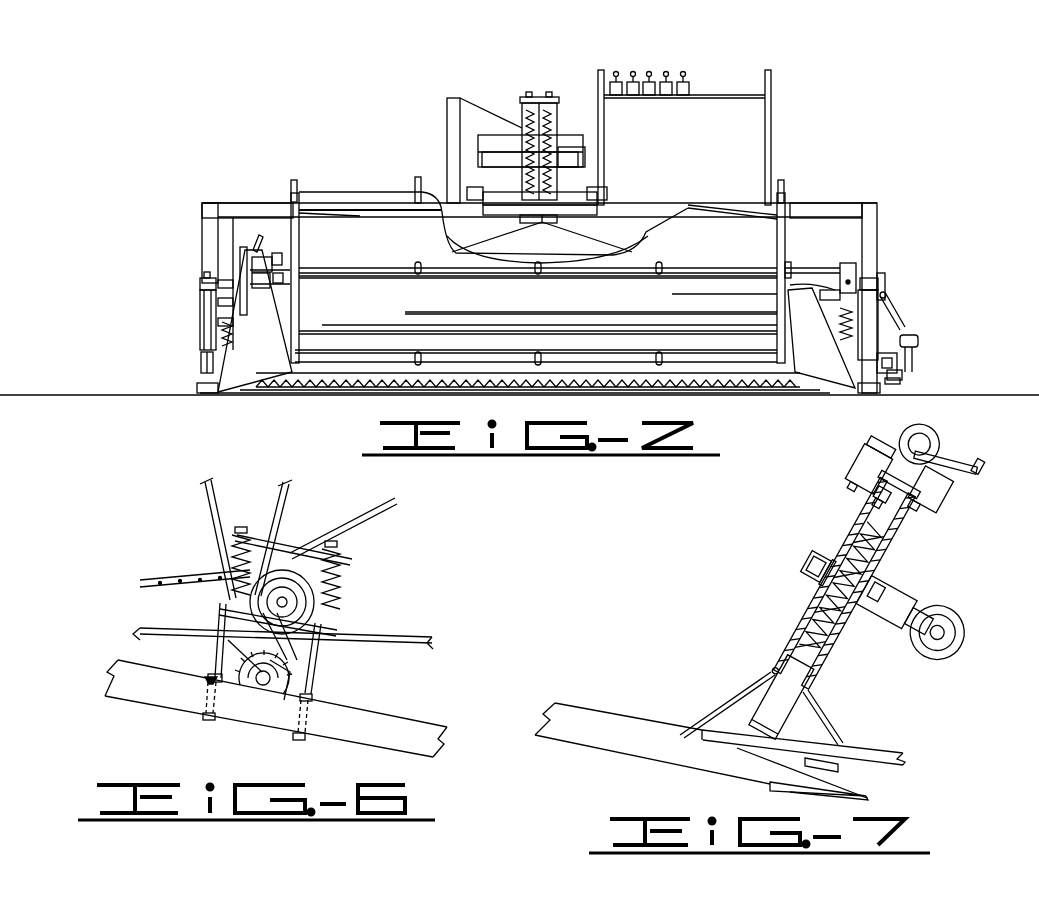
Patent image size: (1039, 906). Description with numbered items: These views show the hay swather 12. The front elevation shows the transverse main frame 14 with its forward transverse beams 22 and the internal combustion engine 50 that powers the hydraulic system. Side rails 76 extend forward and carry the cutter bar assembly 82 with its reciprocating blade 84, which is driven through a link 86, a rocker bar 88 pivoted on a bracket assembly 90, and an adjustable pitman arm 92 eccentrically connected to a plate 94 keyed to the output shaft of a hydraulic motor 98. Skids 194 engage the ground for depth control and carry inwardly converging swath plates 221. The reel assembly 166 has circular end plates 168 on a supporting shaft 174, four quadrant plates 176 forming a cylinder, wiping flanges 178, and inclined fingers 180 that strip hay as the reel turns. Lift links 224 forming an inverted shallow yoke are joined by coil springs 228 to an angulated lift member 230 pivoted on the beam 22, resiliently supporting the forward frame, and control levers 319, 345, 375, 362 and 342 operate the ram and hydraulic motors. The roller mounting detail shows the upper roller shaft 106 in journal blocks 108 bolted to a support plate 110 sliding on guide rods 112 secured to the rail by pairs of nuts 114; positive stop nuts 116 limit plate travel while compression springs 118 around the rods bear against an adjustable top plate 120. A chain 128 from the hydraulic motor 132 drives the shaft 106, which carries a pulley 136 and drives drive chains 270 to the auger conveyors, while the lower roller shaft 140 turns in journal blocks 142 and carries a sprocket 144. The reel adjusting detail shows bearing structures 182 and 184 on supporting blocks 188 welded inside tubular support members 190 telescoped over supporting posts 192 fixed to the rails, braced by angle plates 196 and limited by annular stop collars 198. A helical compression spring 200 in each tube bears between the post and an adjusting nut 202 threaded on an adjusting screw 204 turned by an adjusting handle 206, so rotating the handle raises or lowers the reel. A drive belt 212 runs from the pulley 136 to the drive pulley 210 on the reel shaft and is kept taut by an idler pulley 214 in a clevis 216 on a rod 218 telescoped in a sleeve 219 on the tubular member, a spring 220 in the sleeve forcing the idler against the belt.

In FIG. 2, the hay swather 12 is at (318, 188).
In FIG. 2, the transverse main frame 14 is at (878, 212).
In FIG. 2, the upper and lower forward transverse beams 22 is at (263, 203).
In FIG. 2, the internal combustion engine 50 is at (568, 138).
In FIG. 6, the side rails 76 is at (352, 742).
In FIG. 7, the side rails 76 is at (635, 748).
In FIG. 2, the cutter bar assembly 82 is at (590, 382).
In FIG. 7, the cutter bar assembly 82 is at (866, 786).
In FIG. 2, the reciprocating blade 84 is at (468, 383).
In FIG. 7, the reciprocating blade 84 is at (788, 786).
In FIG. 2, the link 86 is at (902, 382).
In FIG. 2, the rocker bar 88 is at (904, 352).
In FIG. 2, the bracket assembly 90 is at (884, 350).
In FIG. 2, the pitman arm 92 is at (895, 305).
In FIG. 2, the plate 94 is at (886, 280).
In FIG. 2, the hydraulic motor 98 is at (828, 275).
In FIG. 6, the shaft 106 is at (300, 594).
In FIG. 6, the journal blocks 108 is at (302, 673).
In FIG. 6, the support plate 110 is at (336, 631).
In FIG. 6, the guide rods 112 is at (228, 648).
In FIG. 6, the nuts 114 is at (208, 681).
In FIG. 6, the positive stop nut 116 is at (221, 610).
In FIG. 2, the compression springs 118 is at (840, 336).
In FIG. 6, the compression springs 118 is at (237, 538).
In FIG. 6, the adjustable top plate 120 is at (295, 540).
In FIG. 6, the chain 128 is at (296, 470).
In FIG. 2, the hydraulic motor 132 is at (272, 262).
In FIG. 6, the pulley 136 is at (290, 604).
In FIG. 6, the elongated shaft 140 is at (262, 686).
In FIG. 6, the journal blocks 142 is at (260, 684).
In FIG. 6, the sprocket 144 is at (232, 670).
In FIG. 2, the reel assembly 166 is at (365, 190).
In FIG. 2, the circular end plates 168 is at (299, 224).
In FIG. 2, the supporting shaft 174 is at (808, 262).
In FIG. 2, the quadrant plates 176 is at (516, 304).
In FIG. 2, the wiping flanges 178 is at (571, 272).
In FIG. 2, the fingers 180 is at (418, 178).
In FIG. 7, the bearing structure 182 is at (866, 452).
In FIG. 2, the bearing structure 184 is at (851, 268).
In FIG. 2, the supporting block 188 is at (222, 298).
In FIG. 7, the supporting block 188 is at (862, 476).
In FIG. 2, the tubular support members 190 is at (205, 312).
In FIG. 7, the tubular support members 190 is at (858, 528).
In FIG. 7, the supporting post 192 is at (769, 690).
In FIG. 2, the skids 194 is at (200, 390).
In FIG. 7, the skids 194 is at (856, 752).
In FIG. 7, the angle plates 196 is at (720, 714).
In FIG. 2, the annular stop collar 198 is at (200, 356).
In FIG. 7, the annular stop collar 198 is at (770, 670).
In FIG. 7, the helical compression spring 200 is at (882, 546).
In FIG. 7, the adjusting nut 202 is at (868, 501).
In FIG. 7, the adjusting screw 204 is at (938, 505).
In FIG. 2, the adjusting handle 206 is at (208, 277).
In FIG. 7, the adjusting handle 206 is at (950, 468).
In FIG. 2, the drive pulley 210 is at (248, 246).
In FIG. 2, the drive belt 212 is at (250, 250).
In FIG. 6, the drive belt 212 is at (396, 498).
In FIG. 7, the idler pulley 214 is at (946, 608).
In FIG. 7, the clevis 216 is at (909, 660).
In FIG. 7, the rod 218 is at (906, 630).
In FIG. 7, the sleeve 219 is at (810, 580).
In FIG. 7, the spring 220 is at (800, 558).
In FIG. 2, the swath plates 221 is at (250, 342).
In FIG. 2, the lift links 224 is at (565, 225).
In FIG. 2, the coil springs 228 is at (522, 128).
In FIG. 2, the angulated lift member 230 is at (550, 104).
In FIG. 6, the drive chains 270 is at (148, 582).
In FIG. 2, the control lever 319 is at (687, 74).
In FIG. 2, the control lever 342 is at (615, 72).
In FIG. 2, the control lever 345 is at (668, 72).
In FIG. 2, the control lever 362 is at (633, 72).
In FIG. 2, the control lever 375 is at (650, 72).